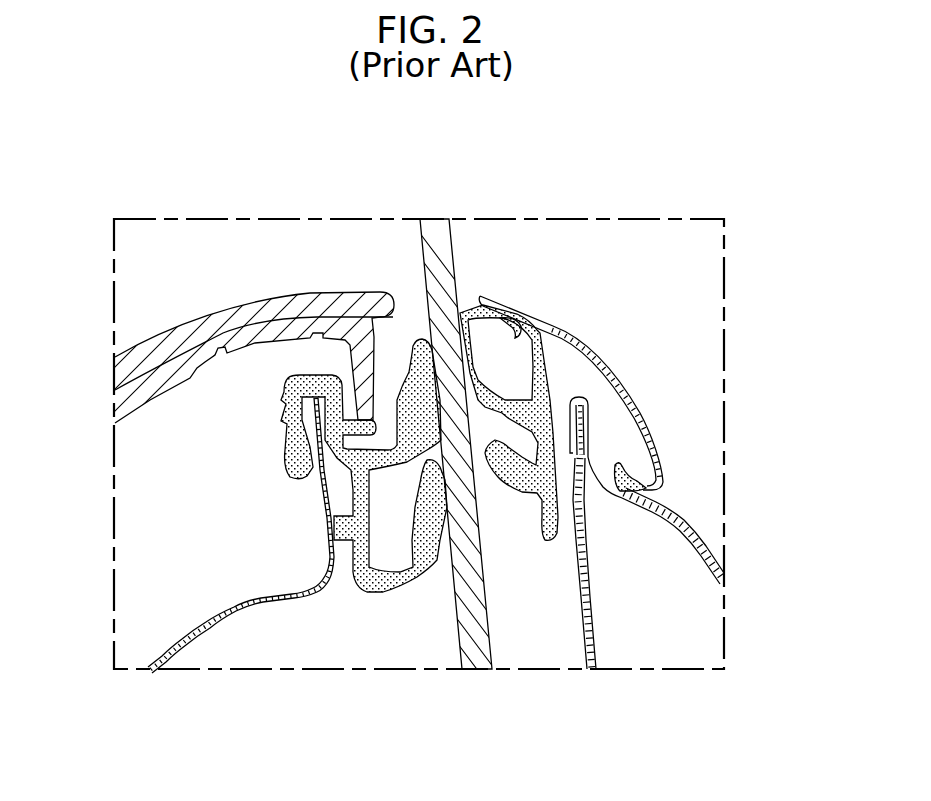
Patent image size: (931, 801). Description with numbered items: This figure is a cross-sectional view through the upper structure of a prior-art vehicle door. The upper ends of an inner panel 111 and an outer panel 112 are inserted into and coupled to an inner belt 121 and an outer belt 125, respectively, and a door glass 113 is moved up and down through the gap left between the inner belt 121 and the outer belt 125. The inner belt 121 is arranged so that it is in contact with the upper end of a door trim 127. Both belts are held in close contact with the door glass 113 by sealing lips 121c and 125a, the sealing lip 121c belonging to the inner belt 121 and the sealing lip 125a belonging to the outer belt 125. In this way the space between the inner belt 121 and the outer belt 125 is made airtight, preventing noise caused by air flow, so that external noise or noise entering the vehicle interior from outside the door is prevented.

The inner panel 111 is at (308, 592).
The outer panel 112 is at (680, 522).
The door glass 113 is at (440, 265).
The inner belt 121 is at (290, 444).
The sealing lip 121c is at (438, 558).
The outer belt 125 is at (627, 387).
The sealing lip 125a is at (497, 372).
The door trim 127 is at (253, 297).